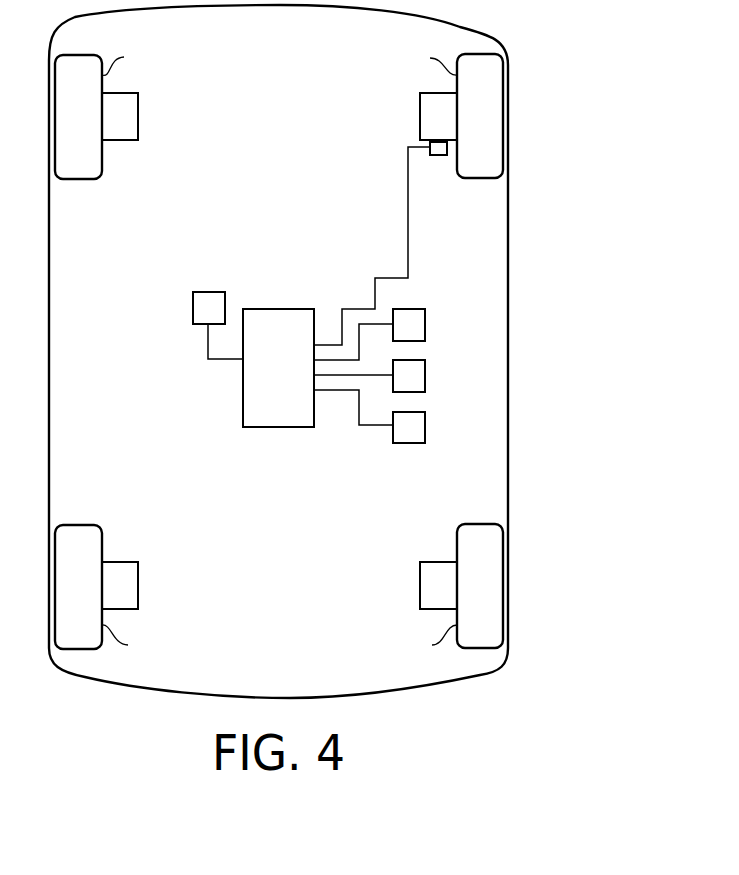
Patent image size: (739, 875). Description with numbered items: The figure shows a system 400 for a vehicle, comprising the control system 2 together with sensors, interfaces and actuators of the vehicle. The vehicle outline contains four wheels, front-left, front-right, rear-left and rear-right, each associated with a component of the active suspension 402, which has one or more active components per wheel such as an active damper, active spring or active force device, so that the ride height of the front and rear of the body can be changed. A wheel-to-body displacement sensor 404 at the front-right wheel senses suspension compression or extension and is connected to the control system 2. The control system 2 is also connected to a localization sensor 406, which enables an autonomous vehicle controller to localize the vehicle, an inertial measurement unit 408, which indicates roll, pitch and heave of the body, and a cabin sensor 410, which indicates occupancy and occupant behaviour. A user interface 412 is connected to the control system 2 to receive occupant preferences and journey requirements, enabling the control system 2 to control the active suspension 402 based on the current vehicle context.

The system 400 is at (546, 88).
The active suspension 402 is at (138, 115).
The wheel-to-body displacement sensor 404 is at (438, 155).
The localization sensor 406 is at (425, 322).
The inertial measurement unit 408 is at (425, 373).
The cabin sensor 410 is at (425, 425).
The user interface 412 is at (193, 306).
The control system 2 is at (243, 390).